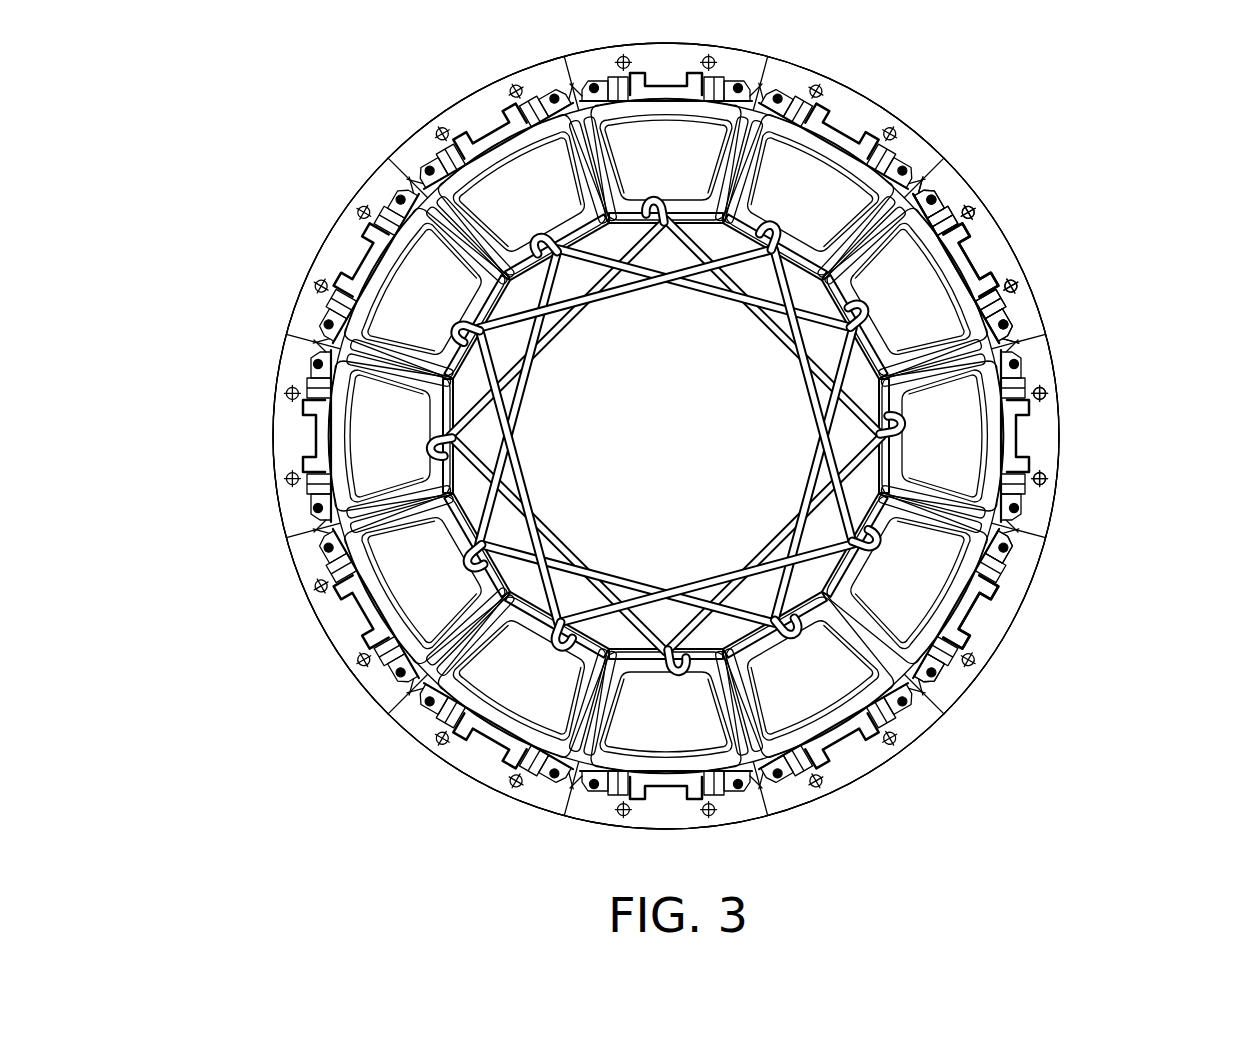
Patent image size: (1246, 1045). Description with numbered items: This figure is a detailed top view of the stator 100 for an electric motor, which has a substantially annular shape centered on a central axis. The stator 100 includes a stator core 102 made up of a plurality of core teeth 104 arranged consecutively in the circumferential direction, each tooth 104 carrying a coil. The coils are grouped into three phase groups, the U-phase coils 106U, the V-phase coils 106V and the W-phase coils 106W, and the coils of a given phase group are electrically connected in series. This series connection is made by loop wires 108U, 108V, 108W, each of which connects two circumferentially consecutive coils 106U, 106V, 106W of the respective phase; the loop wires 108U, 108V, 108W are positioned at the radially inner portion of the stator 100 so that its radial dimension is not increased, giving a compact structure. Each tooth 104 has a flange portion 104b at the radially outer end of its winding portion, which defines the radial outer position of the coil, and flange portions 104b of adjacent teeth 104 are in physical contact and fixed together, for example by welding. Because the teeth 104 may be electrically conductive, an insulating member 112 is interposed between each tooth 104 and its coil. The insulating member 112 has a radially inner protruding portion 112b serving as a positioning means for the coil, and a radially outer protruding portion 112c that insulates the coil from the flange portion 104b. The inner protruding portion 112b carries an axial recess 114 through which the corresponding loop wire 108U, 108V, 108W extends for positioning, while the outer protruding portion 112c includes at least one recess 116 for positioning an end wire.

The stator 100 is at (1128, 160).
The stator core 102 is at (955, 162).
The core tooth 104 is at (1037, 312).
The flange portion 104b is at (993, 258).
The U-phase coil 106U is at (505, 197).
The V-phase coil 106V is at (403, 323).
The W-phase coil 106W is at (383, 430).
The U-phase loop wire 108U is at (565, 232).
The V-phase loop wire 108V is at (478, 314).
The W-phase loop wire 108W is at (455, 440).
The insulating member 112 is at (943, 653).
The radially inner protruding portion 112b is at (963, 602).
The radially outer protruding portion 112c is at (972, 620).
The axial recess 114 is at (907, 673).
The recess 116 is at (967, 657).